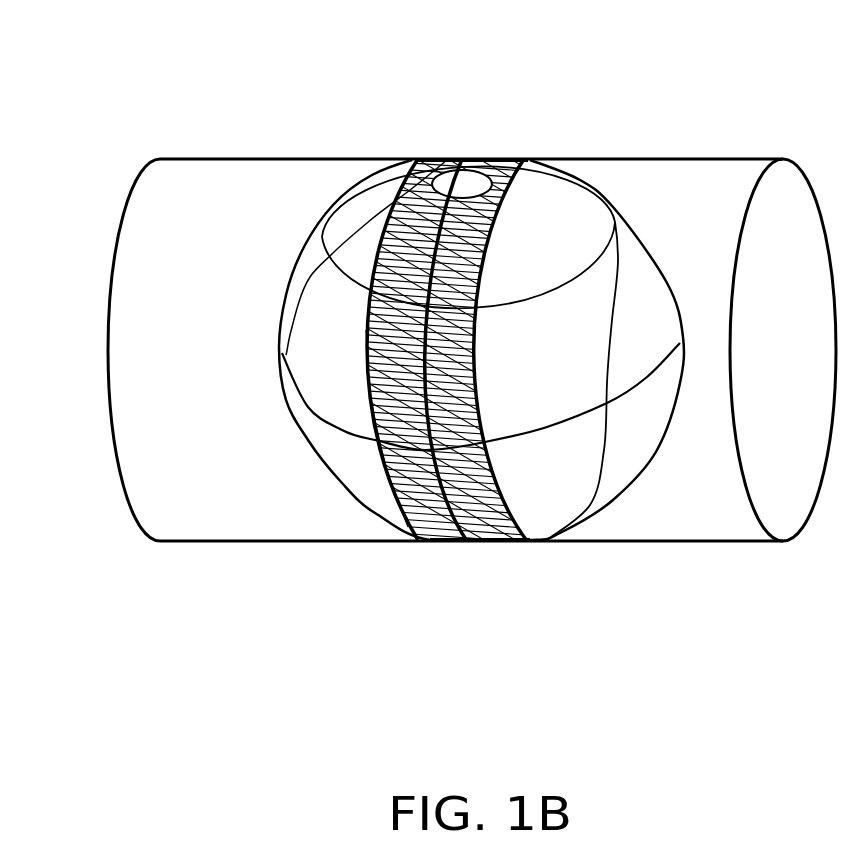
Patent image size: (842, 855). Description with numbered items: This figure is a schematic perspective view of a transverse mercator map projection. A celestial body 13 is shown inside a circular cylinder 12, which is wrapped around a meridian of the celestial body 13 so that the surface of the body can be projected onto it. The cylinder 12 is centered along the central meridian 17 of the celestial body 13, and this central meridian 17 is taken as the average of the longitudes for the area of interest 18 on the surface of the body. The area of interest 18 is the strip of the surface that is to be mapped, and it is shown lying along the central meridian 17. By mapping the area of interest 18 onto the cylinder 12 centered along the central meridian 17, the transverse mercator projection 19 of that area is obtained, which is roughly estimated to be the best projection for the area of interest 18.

The circular cylinder 12 is at (686, 159).
The celestial body 13 is at (334, 484).
The central meridian 17 is at (448, 159).
The area of interest 18 is at (396, 266).
The transverse mercator projection 19 is at (490, 159).